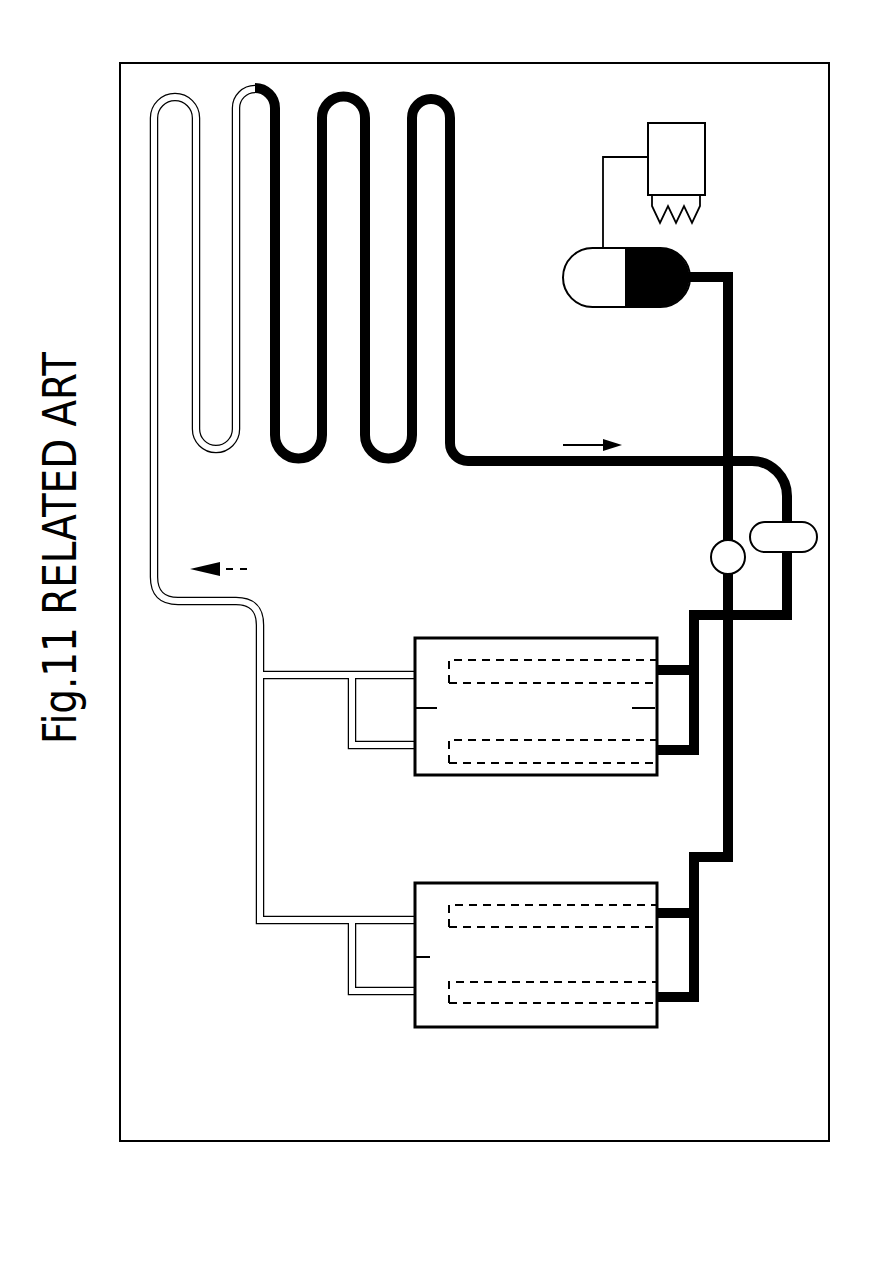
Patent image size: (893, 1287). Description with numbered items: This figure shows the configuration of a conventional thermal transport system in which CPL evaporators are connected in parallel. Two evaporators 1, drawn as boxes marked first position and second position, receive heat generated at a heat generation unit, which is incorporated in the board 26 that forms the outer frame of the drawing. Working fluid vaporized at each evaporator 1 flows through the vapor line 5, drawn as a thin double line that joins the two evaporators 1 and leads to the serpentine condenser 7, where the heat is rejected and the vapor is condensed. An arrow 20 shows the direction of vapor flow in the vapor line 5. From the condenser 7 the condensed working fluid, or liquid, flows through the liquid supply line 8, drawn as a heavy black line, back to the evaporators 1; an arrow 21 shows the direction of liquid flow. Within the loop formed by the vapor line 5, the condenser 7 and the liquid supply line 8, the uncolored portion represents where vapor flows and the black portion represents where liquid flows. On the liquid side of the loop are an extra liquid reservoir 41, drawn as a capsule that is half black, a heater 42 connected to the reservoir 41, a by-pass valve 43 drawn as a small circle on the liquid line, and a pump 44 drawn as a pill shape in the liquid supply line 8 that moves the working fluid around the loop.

The evaporator 1 is at (600, 637).
The vapor line 5 is at (323, 671).
The condenser 7 is at (312, 459).
The liquid supply line 8 is at (578, 465).
The arrow 20 is at (225, 562).
The arrow 21 is at (585, 440).
The board 26 is at (838, 984).
The extra liquid reservoir 41 is at (575, 257).
The heater 42 is at (646, 128).
The by-pass valve 43 is at (712, 548).
The pump 44 is at (796, 521).